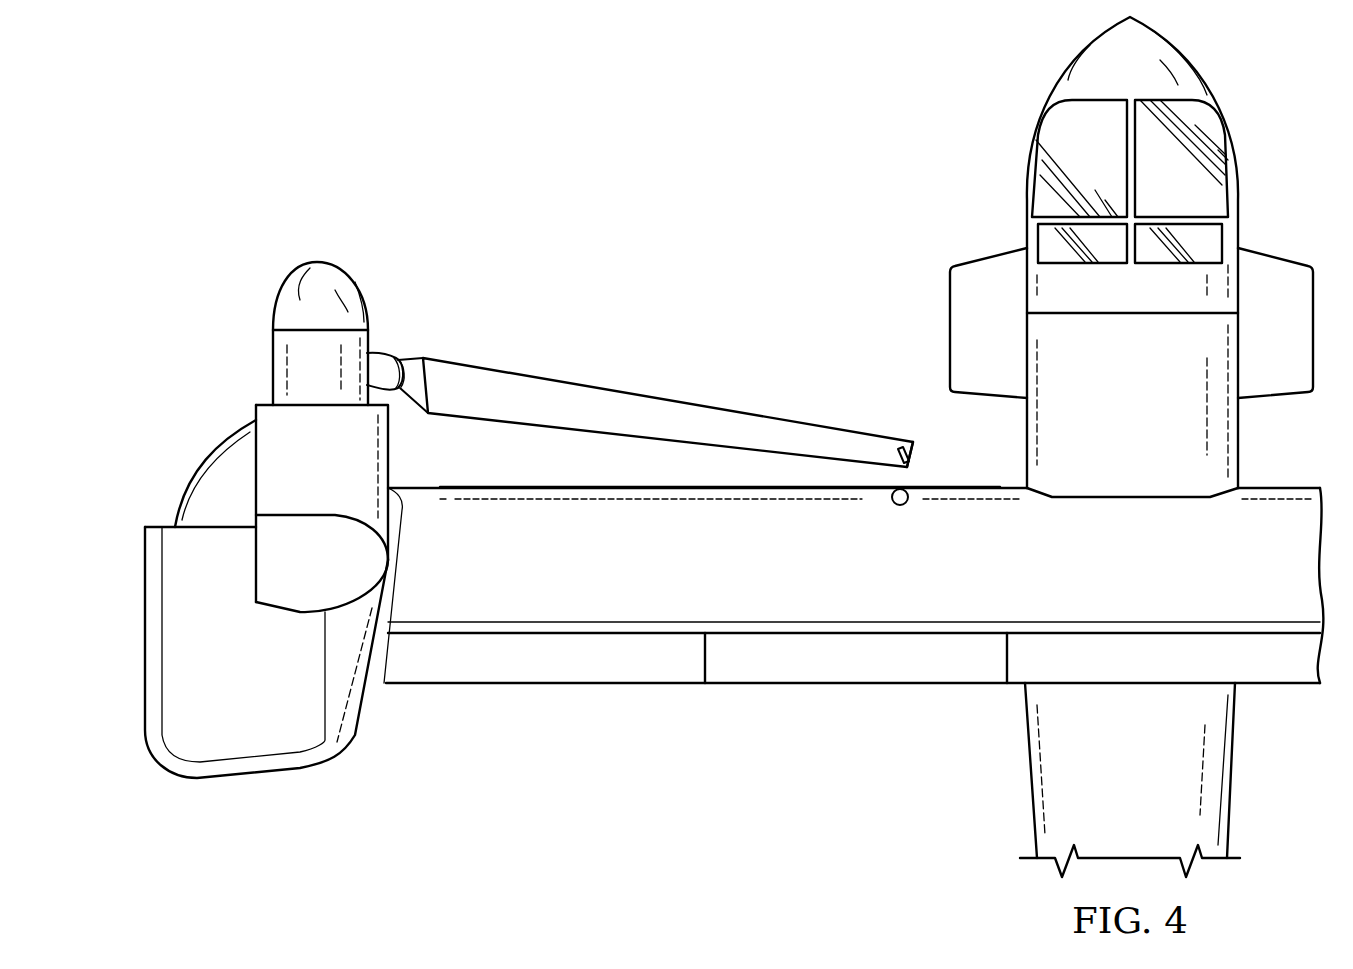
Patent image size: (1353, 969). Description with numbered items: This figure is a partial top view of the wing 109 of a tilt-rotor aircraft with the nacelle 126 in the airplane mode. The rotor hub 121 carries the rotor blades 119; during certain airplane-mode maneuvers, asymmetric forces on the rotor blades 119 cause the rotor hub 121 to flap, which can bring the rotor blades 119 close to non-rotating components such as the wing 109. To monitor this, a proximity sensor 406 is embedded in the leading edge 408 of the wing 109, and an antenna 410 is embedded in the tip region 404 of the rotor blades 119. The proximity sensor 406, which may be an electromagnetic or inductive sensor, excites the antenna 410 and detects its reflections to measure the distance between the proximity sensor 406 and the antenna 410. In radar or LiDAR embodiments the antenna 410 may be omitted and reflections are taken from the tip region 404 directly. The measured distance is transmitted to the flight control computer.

The wing 109 is at (567, 684).
The rotor blades 119 is at (633, 396).
The rotor hub 121 is at (318, 262).
The nacelle 126 is at (225, 782).
The tip region 404 is at (913, 455).
The proximity sensor 406 is at (900, 505).
The leading edge 408 is at (507, 487).
The antenna 410 is at (890, 450).